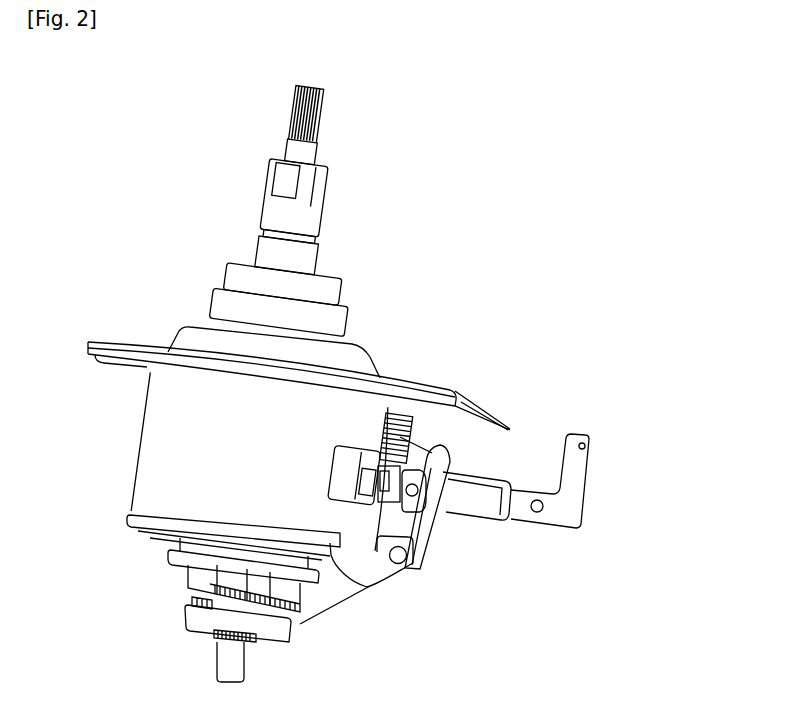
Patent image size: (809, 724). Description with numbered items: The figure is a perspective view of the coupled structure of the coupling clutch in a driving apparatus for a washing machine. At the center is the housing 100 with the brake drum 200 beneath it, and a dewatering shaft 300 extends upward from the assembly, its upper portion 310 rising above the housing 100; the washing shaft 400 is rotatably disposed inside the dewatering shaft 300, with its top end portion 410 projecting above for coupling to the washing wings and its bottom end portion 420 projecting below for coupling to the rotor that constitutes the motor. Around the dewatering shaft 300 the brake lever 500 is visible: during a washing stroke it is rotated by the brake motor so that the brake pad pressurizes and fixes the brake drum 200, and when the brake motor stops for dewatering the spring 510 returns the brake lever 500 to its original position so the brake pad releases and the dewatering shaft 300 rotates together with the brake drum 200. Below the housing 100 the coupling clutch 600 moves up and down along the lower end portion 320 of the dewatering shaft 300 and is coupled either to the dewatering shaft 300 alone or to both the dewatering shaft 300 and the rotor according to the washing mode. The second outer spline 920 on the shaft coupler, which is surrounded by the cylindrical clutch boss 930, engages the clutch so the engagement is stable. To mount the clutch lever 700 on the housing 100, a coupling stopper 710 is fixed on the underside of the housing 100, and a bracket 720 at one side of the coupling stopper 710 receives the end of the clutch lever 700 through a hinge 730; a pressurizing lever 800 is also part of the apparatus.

The housing 100 is at (147, 429).
The brake drum 200 is at (351, 449).
The dewatering shaft 300 is at (250, 246).
The upper rotating portion 310 is at (316, 216).
The lower end portion 320 is at (197, 591).
The washing shaft 400 is at (286, 103).
The top end portion 410 is at (309, 148).
The bottom end portion 420 is at (243, 664).
The brake lever 500 is at (478, 508).
The spring 510 is at (393, 422).
The coupling clutch 600 is at (190, 578).
The clutch lever 700 is at (422, 527).
The coupling stopper 710 is at (128, 519).
The bracket 720 is at (380, 576).
The hinge 730 is at (414, 566).
The pressurizing lever 800 is at (425, 473).
The second outer spline 920 is at (192, 602).
The clutch boss 930 is at (189, 620).